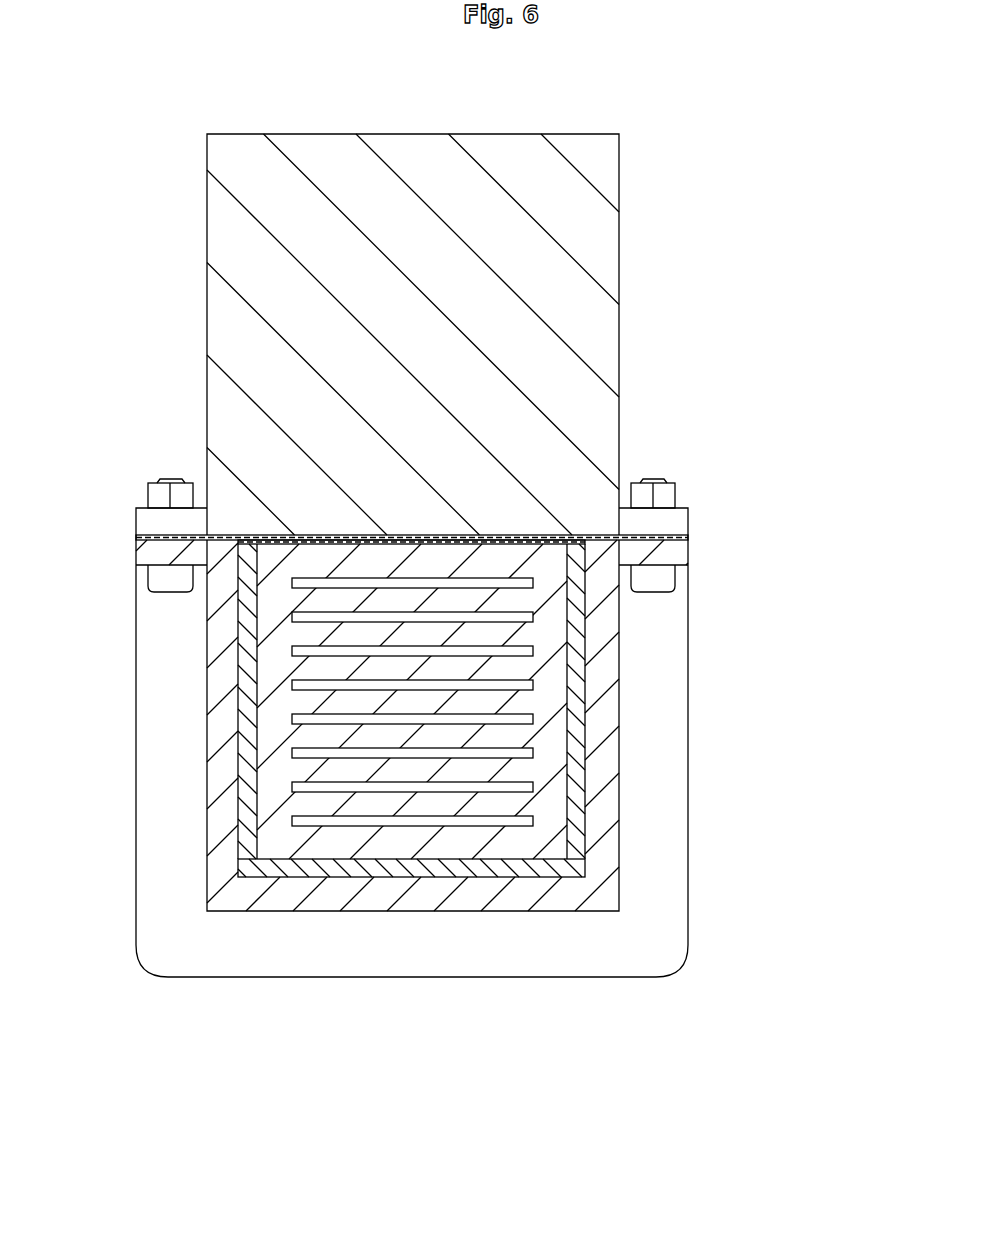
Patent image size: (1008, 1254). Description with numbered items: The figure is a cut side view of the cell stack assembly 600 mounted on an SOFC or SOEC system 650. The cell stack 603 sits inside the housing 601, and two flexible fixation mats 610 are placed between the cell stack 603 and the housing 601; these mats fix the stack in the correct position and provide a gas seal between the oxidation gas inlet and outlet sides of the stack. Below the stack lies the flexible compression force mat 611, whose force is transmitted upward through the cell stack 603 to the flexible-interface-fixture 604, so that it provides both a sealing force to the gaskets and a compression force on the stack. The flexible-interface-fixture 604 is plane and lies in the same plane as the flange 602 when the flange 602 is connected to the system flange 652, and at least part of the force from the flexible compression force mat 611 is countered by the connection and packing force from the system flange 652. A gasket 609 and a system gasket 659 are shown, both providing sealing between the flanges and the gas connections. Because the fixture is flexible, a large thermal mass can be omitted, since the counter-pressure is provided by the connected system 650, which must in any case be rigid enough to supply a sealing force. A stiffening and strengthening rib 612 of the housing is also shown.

The cell stack assembly 600 is at (218, 1000).
The housing 601 is at (603, 700).
The flange 602 is at (668, 552).
The cell stack 603 is at (490, 775).
The flexible-interface-fixture 604 is at (485, 537).
The gasket 609 is at (545, 540).
The flexible fixation mats 610 is at (572, 627).
The flexible compression force mat 611 is at (562, 870).
The stiffening and strengthening rib 612 is at (615, 950).
The SOFC or SOEC system 650 is at (155, 202).
The system flange 652 is at (143, 520).
The system gasket 659 is at (627, 533).